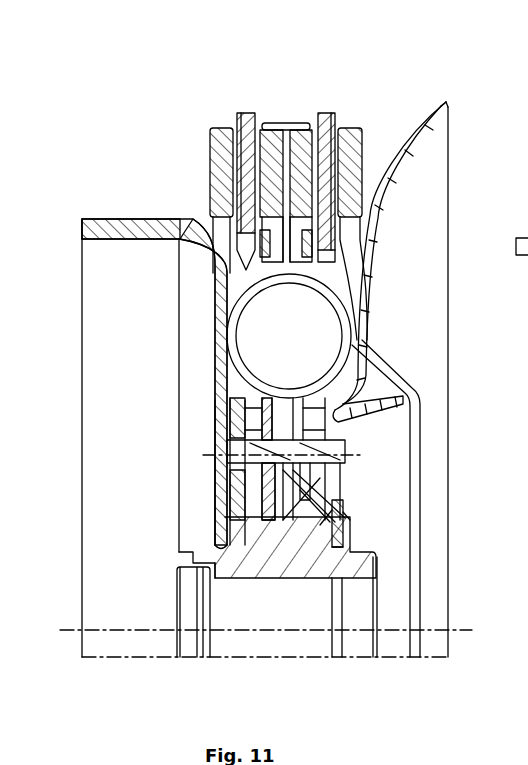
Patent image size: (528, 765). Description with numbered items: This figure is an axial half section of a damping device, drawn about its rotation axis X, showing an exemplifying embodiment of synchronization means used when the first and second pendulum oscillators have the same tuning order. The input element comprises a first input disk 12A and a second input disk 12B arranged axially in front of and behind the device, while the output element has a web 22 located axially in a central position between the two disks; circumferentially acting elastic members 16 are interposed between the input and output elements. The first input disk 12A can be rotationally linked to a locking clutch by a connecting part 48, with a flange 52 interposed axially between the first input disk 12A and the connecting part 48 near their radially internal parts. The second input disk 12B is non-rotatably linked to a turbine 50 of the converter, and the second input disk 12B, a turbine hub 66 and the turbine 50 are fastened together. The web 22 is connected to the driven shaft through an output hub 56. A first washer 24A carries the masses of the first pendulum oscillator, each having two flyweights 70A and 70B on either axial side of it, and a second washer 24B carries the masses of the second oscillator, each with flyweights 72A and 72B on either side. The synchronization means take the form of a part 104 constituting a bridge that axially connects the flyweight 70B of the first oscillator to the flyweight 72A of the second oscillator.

The connecting part 48 is at (107, 225).
The flyweight 70A is at (220, 132).
The flyweight 70B is at (268, 172).
The part constituting a bridge 104 is at (282, 125).
The flyweight 72B is at (352, 138).
The flyweight 72A is at (303, 178).
The circumferentially acting elastic members 16 is at (250, 332).
The second washer 24B is at (358, 330).
The first washer 24A is at (222, 386).
The turbine 50 is at (380, 450).
The first input disk 12A is at (262, 418).
The web 22 is at (345, 423).
The second input disk 12B is at (300, 483).
The flange 52 is at (250, 490).
The turbine hub 66 is at (313, 510).
The output hub 56 is at (300, 560).
The rotation axis X is at (112, 630).